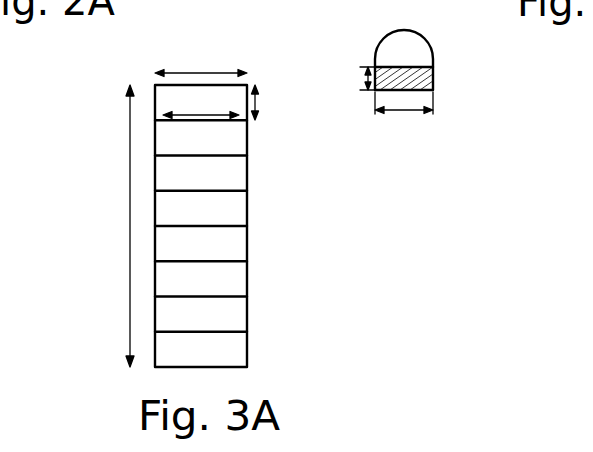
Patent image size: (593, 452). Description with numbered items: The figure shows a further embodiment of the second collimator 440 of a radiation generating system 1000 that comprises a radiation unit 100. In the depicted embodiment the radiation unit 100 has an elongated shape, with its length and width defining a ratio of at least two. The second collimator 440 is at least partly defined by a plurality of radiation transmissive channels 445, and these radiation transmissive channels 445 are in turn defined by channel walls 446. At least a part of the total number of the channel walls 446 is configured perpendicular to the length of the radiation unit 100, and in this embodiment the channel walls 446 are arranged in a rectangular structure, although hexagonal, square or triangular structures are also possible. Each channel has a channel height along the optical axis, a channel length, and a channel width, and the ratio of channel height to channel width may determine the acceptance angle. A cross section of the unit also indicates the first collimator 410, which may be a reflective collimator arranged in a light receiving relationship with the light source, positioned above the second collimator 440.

The radiation generating system 1000 is at (275, 187).
The radiation unit 100 is at (280, 187).
The second collimator 440 is at (258, 352).
The radiation transmissive channels 445 is at (232, 320).
The channel walls 446 is at (231, 222).
The first collimator 410 is at (414, 33).